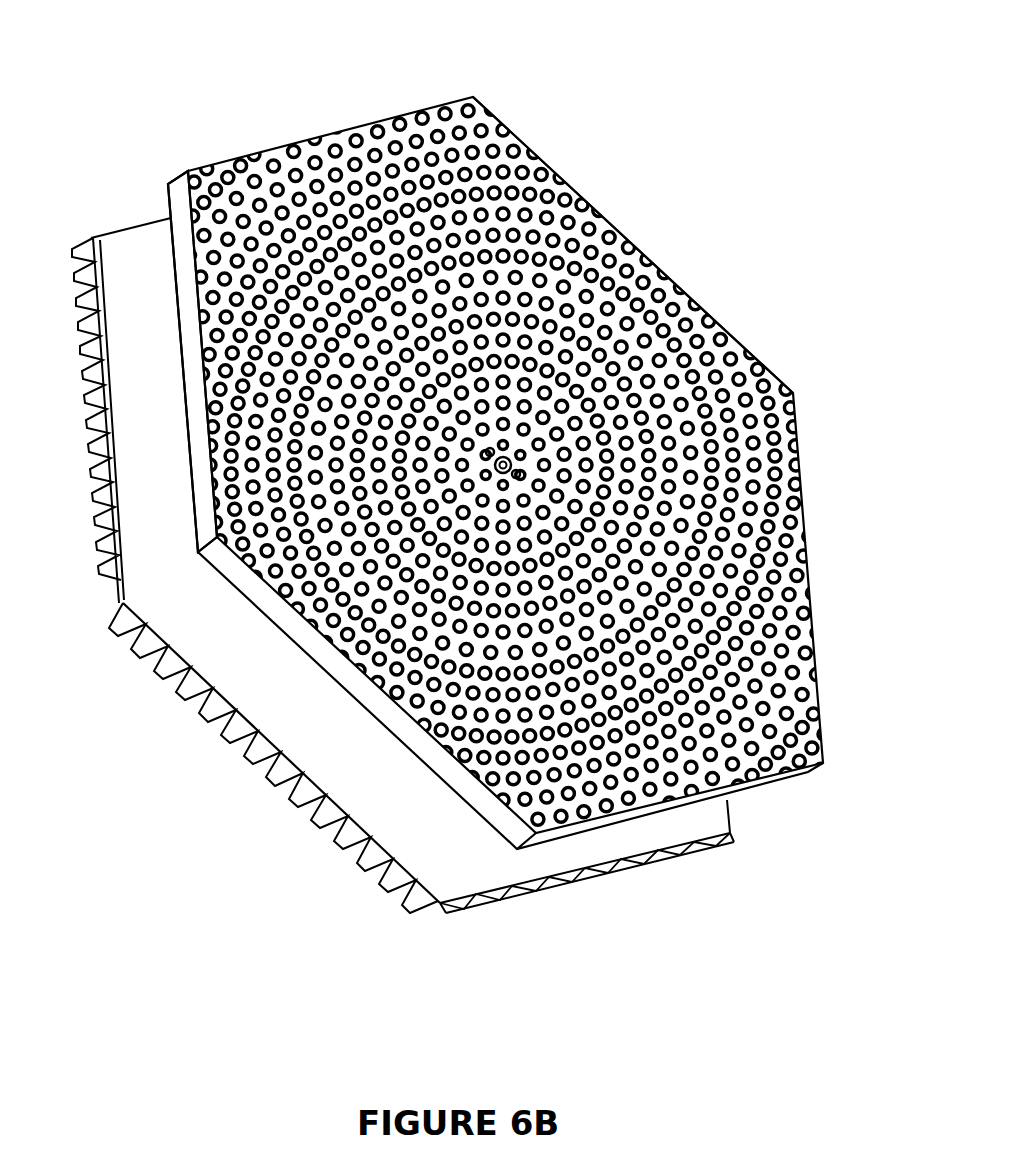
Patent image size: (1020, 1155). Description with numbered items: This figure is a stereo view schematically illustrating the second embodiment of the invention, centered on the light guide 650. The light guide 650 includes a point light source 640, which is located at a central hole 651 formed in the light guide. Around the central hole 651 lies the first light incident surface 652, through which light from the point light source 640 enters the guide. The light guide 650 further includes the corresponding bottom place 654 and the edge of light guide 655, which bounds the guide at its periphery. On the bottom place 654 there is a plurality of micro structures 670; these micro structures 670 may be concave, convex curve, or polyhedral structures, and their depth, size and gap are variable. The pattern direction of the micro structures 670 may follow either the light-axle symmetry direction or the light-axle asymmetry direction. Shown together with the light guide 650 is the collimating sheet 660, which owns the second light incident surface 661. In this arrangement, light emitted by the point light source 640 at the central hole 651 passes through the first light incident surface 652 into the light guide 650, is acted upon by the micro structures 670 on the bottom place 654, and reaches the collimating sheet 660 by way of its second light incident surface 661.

The light guide 650 is at (760, 337).
The central hole 651 is at (498, 456).
The point light source 640 is at (504, 460).
The first light incident surface 652 is at (510, 462).
The bottom place 654 is at (627, 262).
The micro structures 670 is at (270, 172).
The second light incident surface 661 is at (133, 250).
The edge of light guide 655 is at (186, 405).
The collimating sheet 660 is at (222, 775).